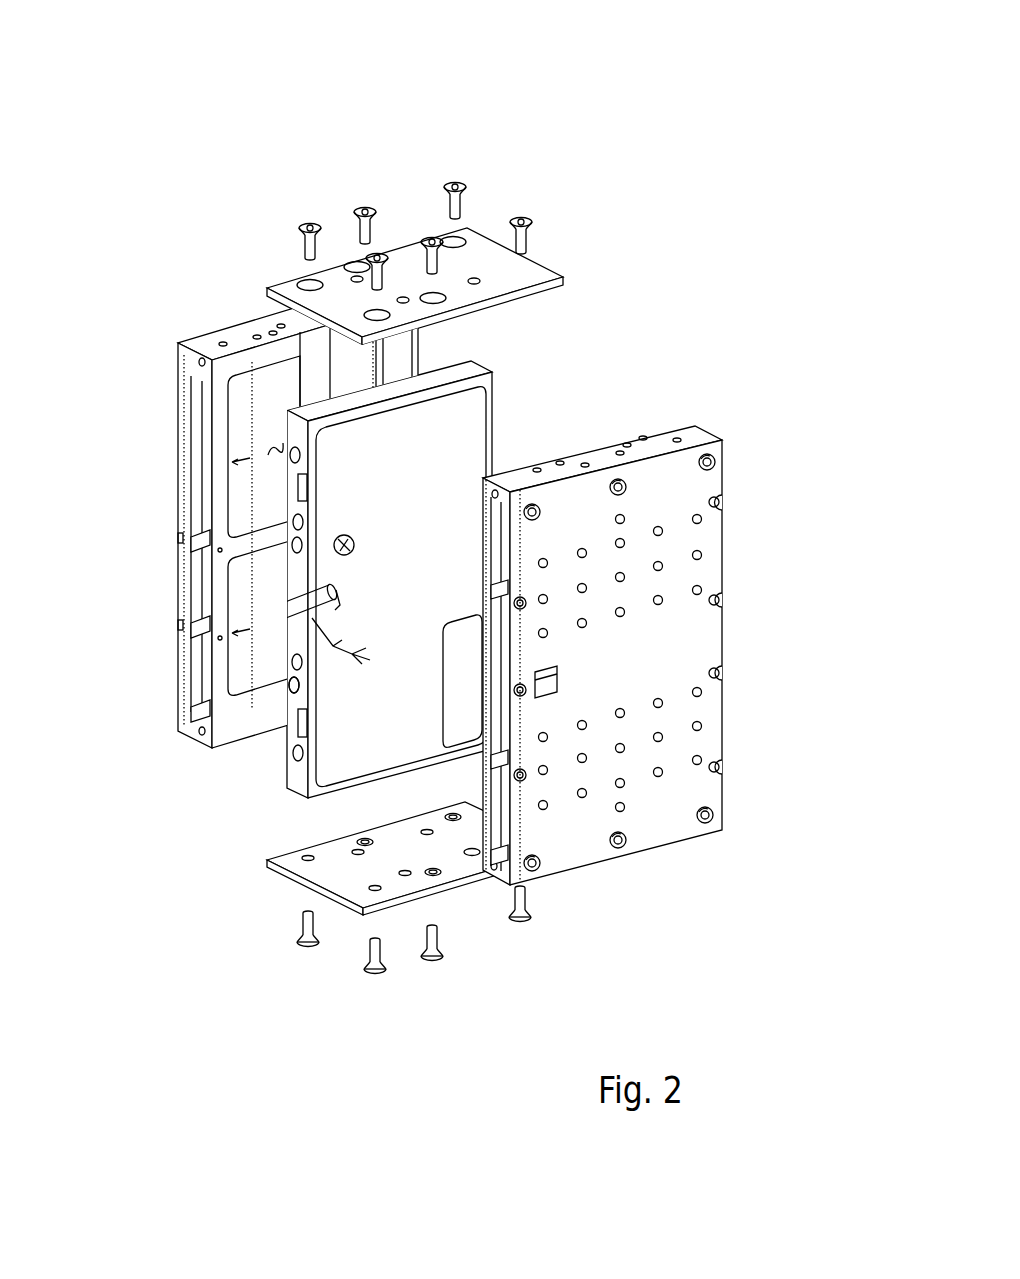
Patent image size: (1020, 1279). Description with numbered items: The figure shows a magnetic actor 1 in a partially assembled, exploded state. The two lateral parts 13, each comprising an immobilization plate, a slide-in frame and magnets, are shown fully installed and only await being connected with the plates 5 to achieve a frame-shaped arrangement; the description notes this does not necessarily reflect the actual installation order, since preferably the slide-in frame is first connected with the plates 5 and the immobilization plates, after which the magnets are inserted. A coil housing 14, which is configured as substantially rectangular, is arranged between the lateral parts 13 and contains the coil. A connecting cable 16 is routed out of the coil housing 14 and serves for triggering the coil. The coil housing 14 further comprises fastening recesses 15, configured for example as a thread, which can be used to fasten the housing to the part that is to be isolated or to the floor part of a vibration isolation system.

The tool holder assembly 1 is at (195, 949).
The plate 5 is at (483, 262).
The lateral part 13 is at (242, 362).
The coil housing 14 is at (440, 448).
The fastening recess 15 is at (288, 685).
The connecting cable 16 is at (270, 610).